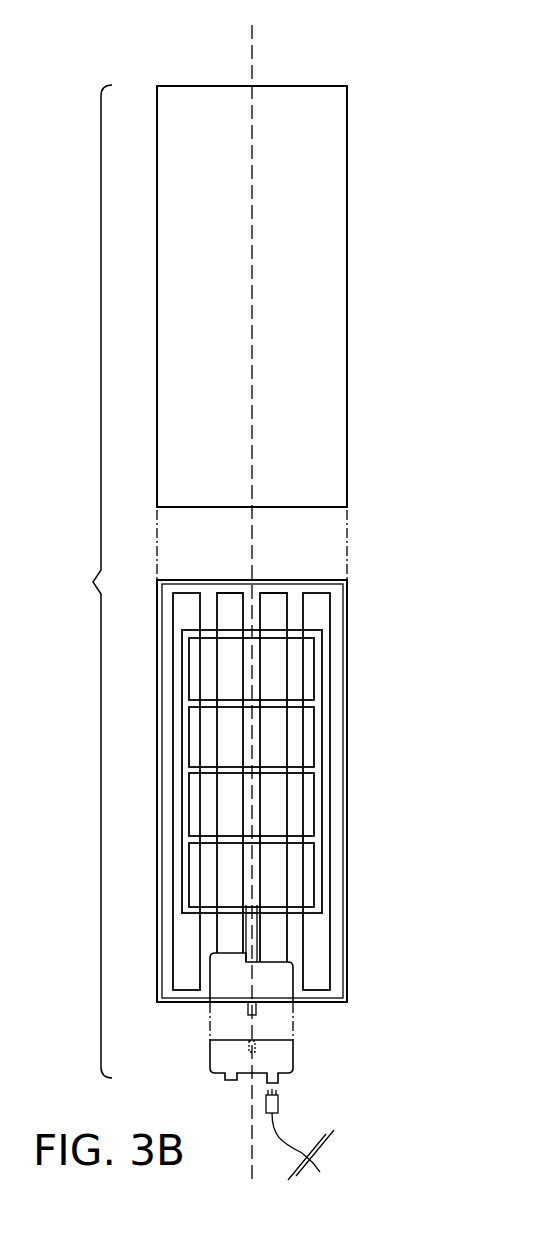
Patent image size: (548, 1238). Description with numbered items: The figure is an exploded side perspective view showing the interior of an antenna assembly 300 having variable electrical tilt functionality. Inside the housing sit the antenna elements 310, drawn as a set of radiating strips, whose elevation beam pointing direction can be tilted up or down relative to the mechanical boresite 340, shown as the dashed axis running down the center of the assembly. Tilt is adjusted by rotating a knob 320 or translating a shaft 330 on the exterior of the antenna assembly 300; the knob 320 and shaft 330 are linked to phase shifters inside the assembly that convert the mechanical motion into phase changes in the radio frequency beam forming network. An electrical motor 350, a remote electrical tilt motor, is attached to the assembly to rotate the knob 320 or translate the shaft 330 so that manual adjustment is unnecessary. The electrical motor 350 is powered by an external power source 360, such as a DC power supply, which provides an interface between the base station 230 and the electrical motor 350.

The antenna assembly 300 is at (388, 95).
The antenna element 310 is at (187, 595).
The knob 320 is at (258, 1008).
The shaft 330 is at (257, 927).
The mechanical boresite 340 is at (250, 1104).
The electrical motor 350 is at (210, 1053).
The external power source 360 is at (280, 1103).
The base station 230 is at (318, 1170).